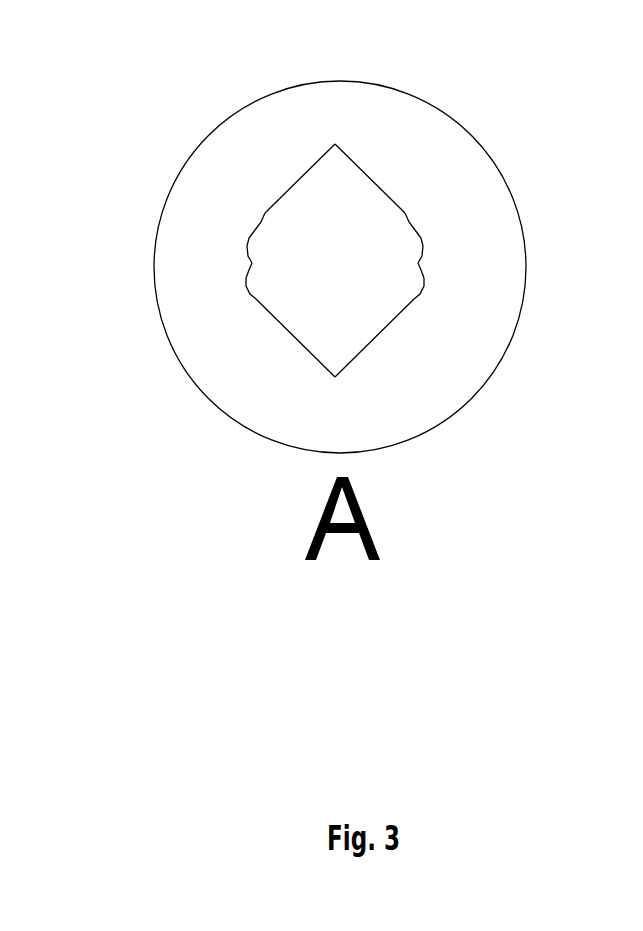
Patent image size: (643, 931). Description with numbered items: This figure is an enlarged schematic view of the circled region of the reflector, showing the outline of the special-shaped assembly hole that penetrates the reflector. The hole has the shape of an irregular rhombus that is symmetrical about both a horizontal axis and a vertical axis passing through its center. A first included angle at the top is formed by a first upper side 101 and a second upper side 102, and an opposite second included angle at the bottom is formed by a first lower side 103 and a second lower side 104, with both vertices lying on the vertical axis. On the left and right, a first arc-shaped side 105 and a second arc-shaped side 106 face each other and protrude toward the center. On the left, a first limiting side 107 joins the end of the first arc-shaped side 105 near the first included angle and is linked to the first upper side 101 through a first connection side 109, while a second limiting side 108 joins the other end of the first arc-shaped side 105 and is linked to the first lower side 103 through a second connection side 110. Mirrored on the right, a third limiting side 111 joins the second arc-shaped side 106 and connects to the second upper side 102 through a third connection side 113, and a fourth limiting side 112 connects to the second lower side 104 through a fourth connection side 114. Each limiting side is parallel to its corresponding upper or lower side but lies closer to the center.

The first upper side 101 is at (299, 178).
The second upper side 102 is at (368, 178).
The first lower side 103 is at (301, 343).
The second lower side 104 is at (377, 333).
The first arc-shaped side 105 is at (252, 262).
The second arc-shaped side 106 is at (418, 262).
The first limiting side 107 is at (261, 223).
The second limiting side 108 is at (257, 300).
The first connection side 109 is at (265, 214).
The second connection side 110 is at (268, 312).
The third limiting side 111 is at (411, 222).
The fourth limiting side 112 is at (415, 300).
The third connection side 113 is at (402, 209).
The fourth connection side 114 is at (412, 320).